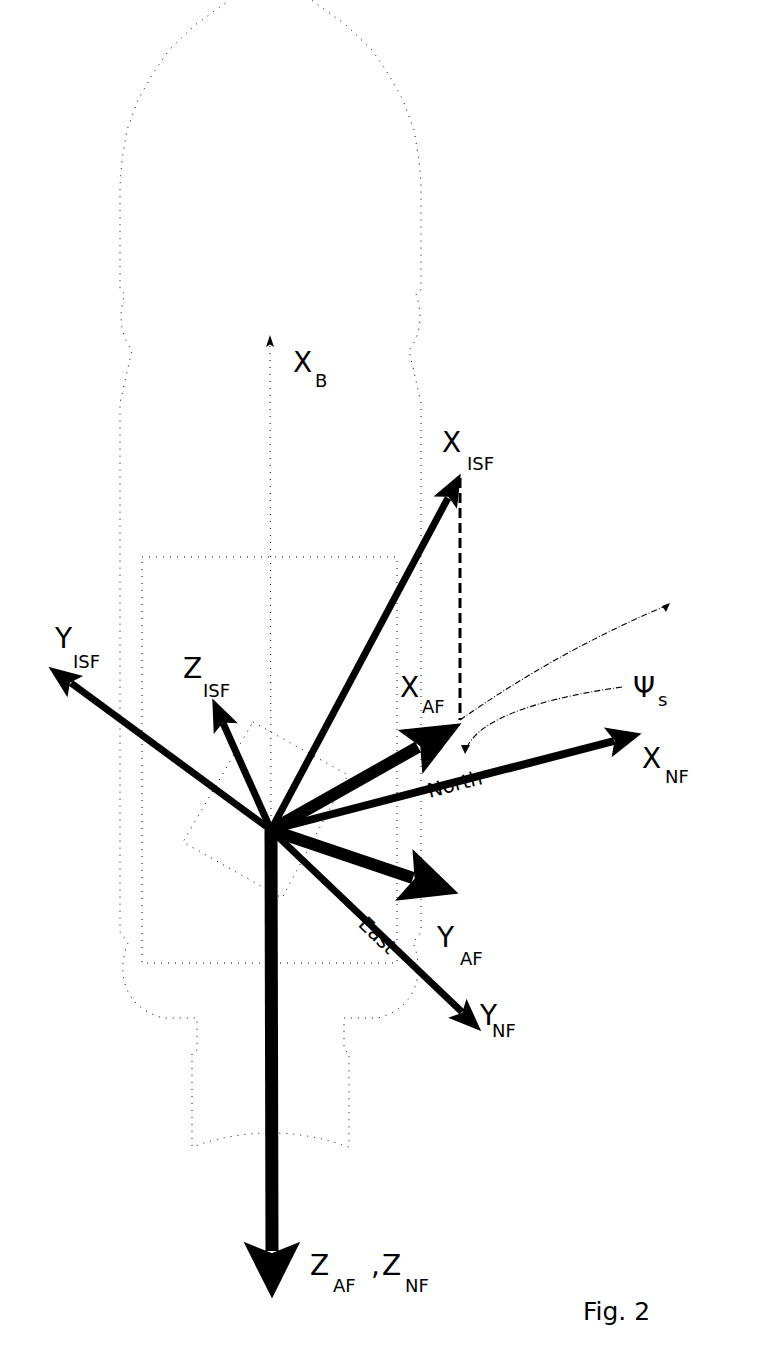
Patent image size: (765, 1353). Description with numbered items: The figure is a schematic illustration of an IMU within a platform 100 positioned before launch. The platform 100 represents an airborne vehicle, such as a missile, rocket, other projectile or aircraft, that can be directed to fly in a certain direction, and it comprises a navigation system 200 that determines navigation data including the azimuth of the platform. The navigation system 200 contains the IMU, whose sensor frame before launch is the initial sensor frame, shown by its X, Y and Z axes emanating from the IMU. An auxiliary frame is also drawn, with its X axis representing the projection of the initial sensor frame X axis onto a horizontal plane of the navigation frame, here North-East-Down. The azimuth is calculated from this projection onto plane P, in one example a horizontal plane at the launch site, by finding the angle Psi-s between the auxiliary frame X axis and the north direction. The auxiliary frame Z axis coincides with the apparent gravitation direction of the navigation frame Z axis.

The platform 100 is at (270, 573).
The navigation system 200 is at (269, 760).
The element IMU is at (265, 810).
The plane P is at (565, 678).